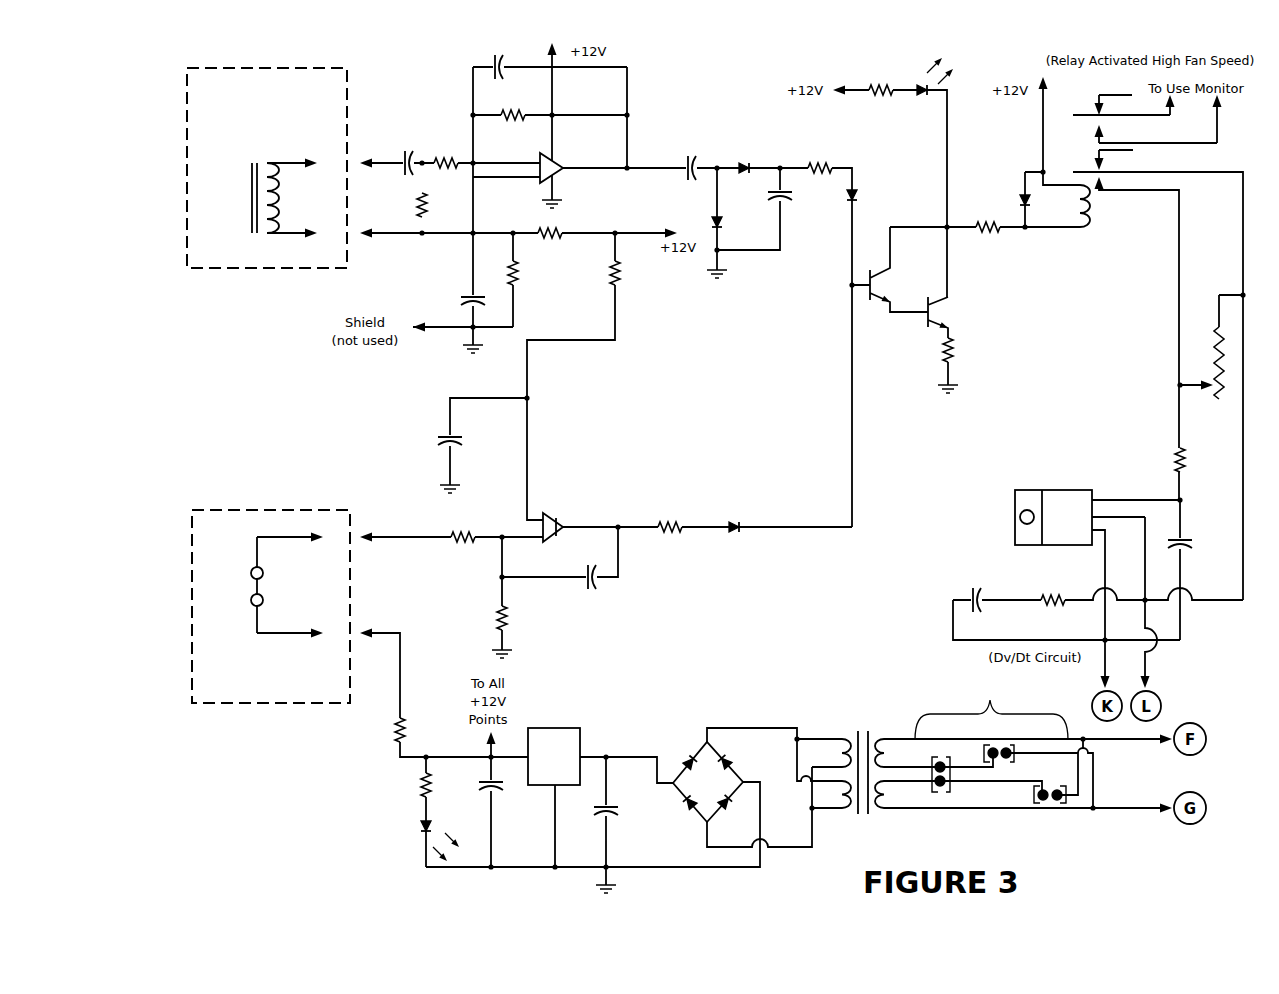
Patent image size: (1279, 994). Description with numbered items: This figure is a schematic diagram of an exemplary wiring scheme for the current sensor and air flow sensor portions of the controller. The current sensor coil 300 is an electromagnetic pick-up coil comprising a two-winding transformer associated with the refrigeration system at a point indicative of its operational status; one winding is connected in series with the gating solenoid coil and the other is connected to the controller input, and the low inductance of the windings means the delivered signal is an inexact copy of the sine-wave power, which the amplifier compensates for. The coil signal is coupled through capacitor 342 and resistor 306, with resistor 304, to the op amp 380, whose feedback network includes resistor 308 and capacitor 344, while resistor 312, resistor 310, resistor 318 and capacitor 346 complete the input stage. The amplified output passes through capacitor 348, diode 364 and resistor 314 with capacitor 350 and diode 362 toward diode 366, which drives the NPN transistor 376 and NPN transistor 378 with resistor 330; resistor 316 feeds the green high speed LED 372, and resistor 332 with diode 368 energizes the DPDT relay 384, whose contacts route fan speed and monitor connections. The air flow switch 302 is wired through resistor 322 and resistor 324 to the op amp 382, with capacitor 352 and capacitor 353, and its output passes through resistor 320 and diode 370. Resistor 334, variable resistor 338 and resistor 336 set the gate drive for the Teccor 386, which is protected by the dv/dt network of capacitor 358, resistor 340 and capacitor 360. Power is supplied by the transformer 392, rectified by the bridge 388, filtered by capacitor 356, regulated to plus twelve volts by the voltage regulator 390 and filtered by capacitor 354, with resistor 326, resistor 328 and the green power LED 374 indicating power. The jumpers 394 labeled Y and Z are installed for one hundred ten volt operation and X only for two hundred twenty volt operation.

The current sensor coil 300 is at (243, 269).
The air flow switch 302 is at (245, 508).
The resistor 304 is at (412, 200).
The resistor 306 is at (448, 150).
The resistor 308 is at (502, 126).
The resistor 310 is at (525, 276).
The resistor 312 is at (550, 245).
The resistor 314 is at (817, 153).
The resistor 316 is at (878, 97).
The resistor 318 is at (632, 272).
The resistor 320 is at (672, 512).
The resistor 322 is at (458, 550).
The resistor 324 is at (490, 617).
The resistor 326 is at (392, 731).
The resistor 328 is at (415, 785).
The resistor 330 is at (962, 352).
The resistor 332 is at (990, 240).
The resistor 334 is at (1215, 330).
The resistor 336 is at (1173, 462).
The variable resistor 338 is at (1216, 397).
The resistor 340 is at (1045, 590).
The capacitor 342 is at (408, 150).
The capacitor 344 is at (487, 53).
The capacitor 346 is at (462, 298).
The capacitor 348 is at (690, 147).
The capacitor 350 is at (797, 197).
The capacitor 352 is at (432, 433).
The capacitor 353 is at (595, 598).
The capacitor 354 is at (500, 797).
The capacitor 356 is at (625, 812).
The capacitor 358 is at (963, 583).
The capacitor 360 is at (1195, 540).
The diode 362 is at (705, 220).
The diode 364 is at (745, 160).
The diode 366 is at (858, 190).
The diode 368 is at (1015, 200).
The diode 370 is at (740, 515).
The LED 372 is at (962, 83).
The LED 374 is at (415, 829).
The NPN transistor 376 is at (872, 318).
The NPN transistor 378 is at (948, 310).
The op amp 380 is at (565, 178).
The op amp 382 is at (555, 512).
The relay 384 is at (1097, 222).
The Teccor 386 is at (1014, 505).
The bridge 388 is at (688, 745).
The voltage regulator 390 is at (556, 728).
The transformer 392 is at (860, 727).
The jumpers 394 is at (990, 700).